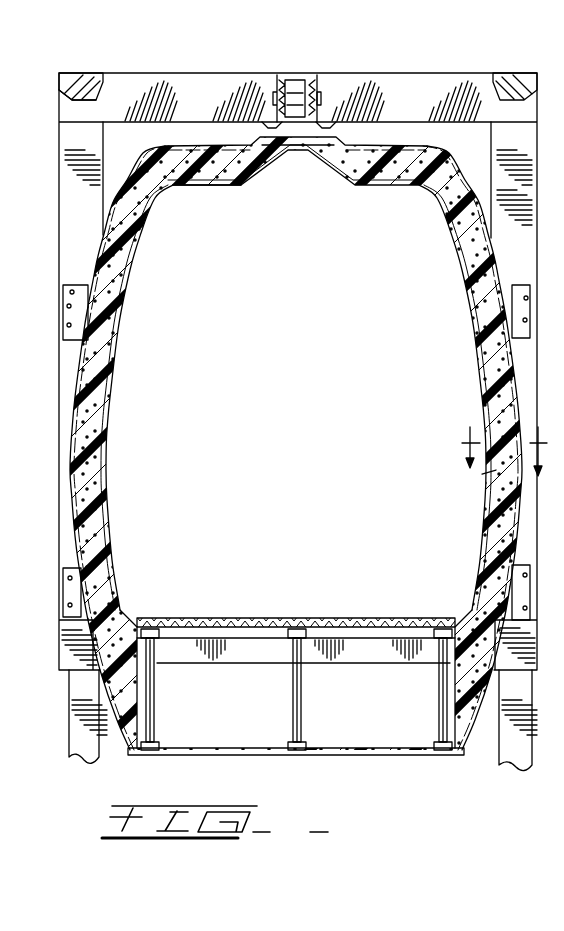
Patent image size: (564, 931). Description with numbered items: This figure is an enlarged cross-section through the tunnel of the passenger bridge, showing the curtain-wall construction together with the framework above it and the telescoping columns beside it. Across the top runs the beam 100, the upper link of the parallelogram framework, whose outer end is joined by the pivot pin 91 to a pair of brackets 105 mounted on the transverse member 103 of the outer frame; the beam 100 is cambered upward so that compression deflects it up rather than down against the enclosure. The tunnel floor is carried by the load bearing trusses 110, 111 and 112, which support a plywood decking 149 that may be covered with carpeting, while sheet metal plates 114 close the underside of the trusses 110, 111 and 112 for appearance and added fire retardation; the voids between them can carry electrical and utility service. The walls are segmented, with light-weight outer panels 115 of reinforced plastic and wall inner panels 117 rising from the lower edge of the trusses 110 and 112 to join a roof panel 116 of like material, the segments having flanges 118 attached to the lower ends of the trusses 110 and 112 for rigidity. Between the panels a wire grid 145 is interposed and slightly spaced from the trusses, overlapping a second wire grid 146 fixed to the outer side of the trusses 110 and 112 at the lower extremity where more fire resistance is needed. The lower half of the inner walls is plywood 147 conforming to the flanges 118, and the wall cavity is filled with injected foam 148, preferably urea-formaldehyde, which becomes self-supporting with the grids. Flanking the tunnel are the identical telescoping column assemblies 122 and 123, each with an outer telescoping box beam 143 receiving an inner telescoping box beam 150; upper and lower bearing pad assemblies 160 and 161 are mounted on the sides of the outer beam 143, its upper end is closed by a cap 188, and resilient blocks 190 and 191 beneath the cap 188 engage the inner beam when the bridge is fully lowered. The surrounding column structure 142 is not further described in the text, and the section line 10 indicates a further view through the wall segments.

The section line 10- 10 is at (505, 441).
The pivot pin 91 is at (319, 95).
The beam 100 is at (306, 73).
The transverse member 103 is at (458, 76).
The brackets 105 is at (280, 123).
The load bearing truss 110 is at (447, 688).
The load bearing truss 111 is at (292, 708).
The load bearing truss 112 is at (155, 717).
The sheet metal plates 114 is at (270, 753).
The outer panels 115 is at (282, 465).
The roof panel 116 is at (210, 187).
The wall inner panels 117 is at (107, 373).
The flanges 118 is at (140, 627).
The telescoping column assembly 122 is at (56, 152).
The telescoping column assembly 123 is at (446, 178).
The frame 142 is at (60, 230).
The outer telescoping box beam 143 is at (504, 140).
The wire grid 145 is at (68, 445).
The second wire grid 146 is at (147, 683).
The plywood 147 is at (113, 580).
The foam 148 is at (83, 538).
The decking 149 is at (300, 625).
The inner telescoping box beam 150 is at (72, 720).
The upper bearing pad assembly 160 is at (70, 300).
The lower bearing pad assembly 161 is at (67, 605).
The cap 188 is at (78, 73).
The resilient block 190 is at (62, 97).
The resilient block 191 is at (488, 106).